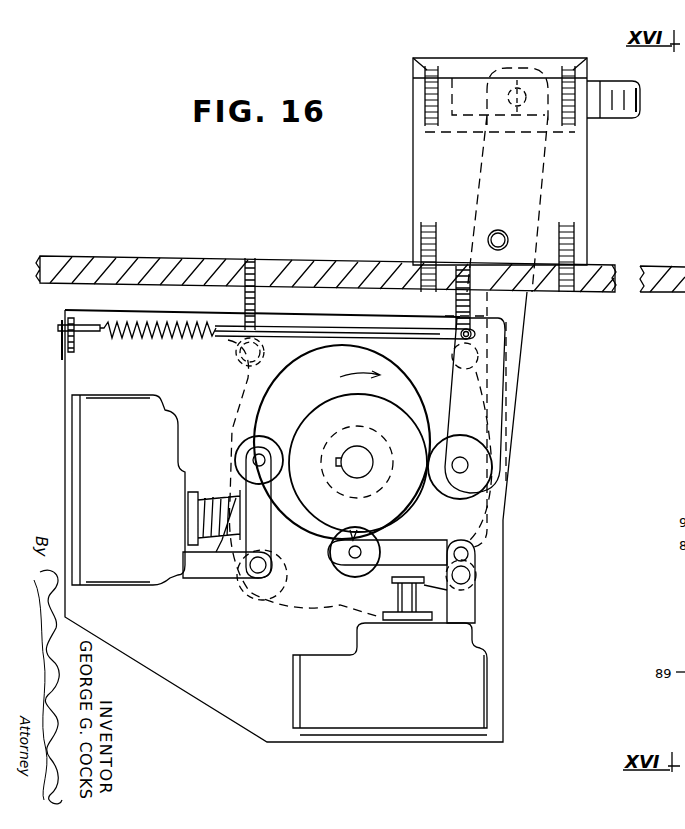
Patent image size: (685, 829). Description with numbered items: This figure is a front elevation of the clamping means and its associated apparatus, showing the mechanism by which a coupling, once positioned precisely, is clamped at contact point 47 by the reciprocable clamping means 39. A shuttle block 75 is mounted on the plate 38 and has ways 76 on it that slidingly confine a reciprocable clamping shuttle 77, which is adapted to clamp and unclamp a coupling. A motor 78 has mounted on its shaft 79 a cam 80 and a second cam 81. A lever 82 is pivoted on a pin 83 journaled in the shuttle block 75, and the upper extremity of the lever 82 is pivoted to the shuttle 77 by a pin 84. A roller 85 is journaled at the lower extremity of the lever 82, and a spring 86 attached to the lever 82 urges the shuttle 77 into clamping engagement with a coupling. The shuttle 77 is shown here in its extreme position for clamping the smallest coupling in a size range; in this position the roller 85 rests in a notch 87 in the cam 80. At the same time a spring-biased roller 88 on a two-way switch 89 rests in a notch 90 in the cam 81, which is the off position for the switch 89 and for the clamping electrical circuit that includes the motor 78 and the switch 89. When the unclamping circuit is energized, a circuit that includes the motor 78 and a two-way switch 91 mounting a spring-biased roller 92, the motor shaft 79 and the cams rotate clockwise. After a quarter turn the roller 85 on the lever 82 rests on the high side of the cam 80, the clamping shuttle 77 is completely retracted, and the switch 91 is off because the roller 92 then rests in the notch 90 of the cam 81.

The plate 38 is at (342, 263).
The reciprocable clamping means 39 is at (519, 159).
The contact point 47 is at (641, 110).
The shuttle block 75 is at (585, 206).
The ways 76 is at (478, 58).
The reciprocable clamping shuttle 77 is at (622, 82).
The motor 78 is at (497, 532).
The shaft 79 is at (362, 450).
The cam 80 is at (282, 396).
The second cam 81 is at (346, 404).
The lever 82 is at (520, 337).
The pin 83 is at (498, 231).
The pin 84 is at (511, 72).
The roller 85 is at (452, 496).
The spring 86 is at (162, 340).
The notch 87 is at (455, 382).
The spring-biased roller 88 is at (340, 556).
The two-way switch 89 is at (298, 678).
The notch 90 is at (352, 532).
The two-way switch 91 is at (150, 582).
The spring-biased roller 92 is at (238, 448).